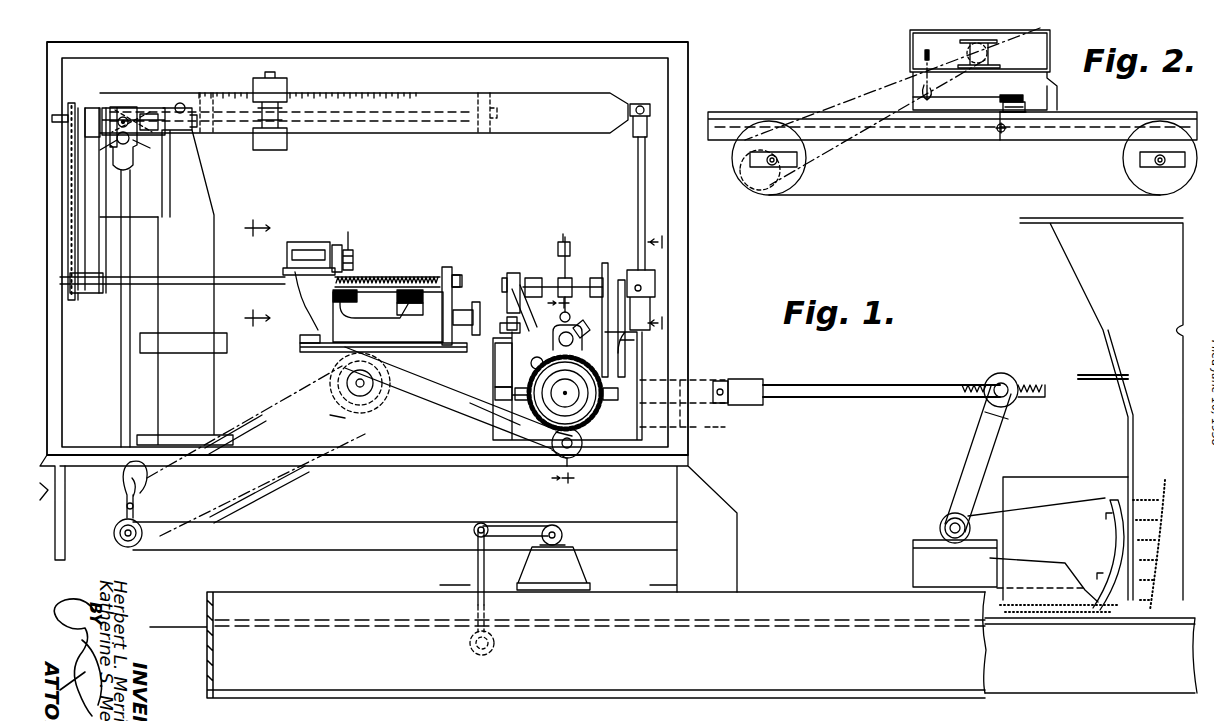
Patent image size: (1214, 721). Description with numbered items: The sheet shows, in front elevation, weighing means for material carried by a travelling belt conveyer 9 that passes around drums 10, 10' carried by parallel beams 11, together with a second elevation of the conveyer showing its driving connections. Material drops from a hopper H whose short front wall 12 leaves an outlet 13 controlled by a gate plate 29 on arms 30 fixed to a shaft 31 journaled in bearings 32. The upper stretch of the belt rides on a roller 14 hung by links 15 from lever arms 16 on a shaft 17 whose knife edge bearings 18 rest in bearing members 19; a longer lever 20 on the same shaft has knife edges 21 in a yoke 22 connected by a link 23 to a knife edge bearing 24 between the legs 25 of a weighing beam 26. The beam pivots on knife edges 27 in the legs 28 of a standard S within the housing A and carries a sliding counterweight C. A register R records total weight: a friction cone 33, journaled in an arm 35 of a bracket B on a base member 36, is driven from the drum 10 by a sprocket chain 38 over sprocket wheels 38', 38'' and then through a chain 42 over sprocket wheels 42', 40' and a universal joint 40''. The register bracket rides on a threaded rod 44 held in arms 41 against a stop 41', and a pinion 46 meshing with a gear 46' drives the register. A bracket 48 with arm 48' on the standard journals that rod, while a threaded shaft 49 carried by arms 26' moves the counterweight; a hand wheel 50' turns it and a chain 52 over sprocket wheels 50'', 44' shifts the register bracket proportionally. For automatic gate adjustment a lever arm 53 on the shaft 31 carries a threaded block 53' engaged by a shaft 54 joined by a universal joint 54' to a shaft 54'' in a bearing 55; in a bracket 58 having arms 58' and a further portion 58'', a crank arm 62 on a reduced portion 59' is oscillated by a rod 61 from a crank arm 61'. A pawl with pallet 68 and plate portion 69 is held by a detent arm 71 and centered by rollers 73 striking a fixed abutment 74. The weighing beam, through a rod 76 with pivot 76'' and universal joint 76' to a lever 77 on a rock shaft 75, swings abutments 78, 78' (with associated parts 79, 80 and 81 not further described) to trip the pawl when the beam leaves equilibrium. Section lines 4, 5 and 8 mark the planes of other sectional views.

In FIG. 1, the section line 4- 4 is at (262, 273).
In FIG. 1, the section line 5- 5 is at (654, 281).
In FIG. 1, the section line 8- 8 is at (556, 391).
In FIG. 1, the travelling belt conveyer 9 is at (1033, 628).
In FIG. 2, the travelling belt conveyer 9 is at (955, 195).
In FIG. 2, the drum 10 is at (805, 158).
In FIG. 2, the drum 10' is at (1139, 158).
In FIG. 1, the beams 11 is at (835, 650).
In FIG. 2, the beams 11 is at (980, 145).
In FIG. 1, the front wall 12 is at (1125, 445).
In FIG. 1, the outlet 13 is at (1160, 528).
In FIG. 1, the roller 14 is at (494, 648).
In FIG. 2, the roller 14 is at (1008, 132).
In FIG. 1, the links 15 is at (478, 572).
In FIG. 2, the links 15 is at (998, 118).
In FIG. 1, the lever arms 16 is at (512, 522).
In FIG. 2, the lever arms 16 is at (1012, 93).
In FIG. 1, the shaft 17 is at (564, 522).
In FIG. 1, the knife edge pivot bearings 18 is at (548, 522).
In FIG. 1, the bearing members 19 is at (570, 556).
In FIG. 2, the bearing members 19 is at (1030, 106).
In FIG. 1, the lever 20 is at (392, 518).
In FIG. 2, the lever 20 is at (978, 90).
In FIG. 1, the knife edge pivot bearings 21 is at (135, 547).
In FIG. 1, the yoke member 22 is at (140, 510).
In FIG. 2, the yoke member 22 is at (922, 92).
In FIG. 1, the link 23 is at (121, 398).
In FIG. 2, the link 23 is at (927, 55).
In FIG. 1, the knife edge pivot bearing 24 is at (126, 107).
In FIG. 1, the legs 25 is at (150, 110).
In FIG. 1, the weighing beam 26 is at (364, 138).
In FIG. 1, the arms 26' is at (372, 137).
In FIG. 1, the knife edge pivot bearings 27 is at (184, 104).
In FIG. 1, the legs 28 is at (170, 130).
In FIG. 1, the plate 29 is at (1112, 508).
In FIG. 1, the arms 30 is at (1033, 530).
In FIG. 1, the shaft 31 is at (940, 526).
In FIG. 1, the bearings 32 is at (915, 544).
In FIG. 1, the friction cone 33 is at (400, 276).
In FIG. 1, the arm 35 is at (446, 268).
In FIG. 1, the base member 36 is at (335, 385).
In FIG. 2, the base member 36 is at (990, 58).
In FIG. 1, the sprocket chain 38 is at (256, 451).
In FIG. 2, the sprocket chain 38 is at (892, 106).
In FIG. 2, the sprocket wheel 38' is at (789, 189).
In FIG. 1, the sprocket wheel 38'' is at (325, 416).
In FIG. 2, the sprocket wheel 38'' is at (961, 47).
In FIG. 1, the sprocket wheel 40' is at (489, 305).
In FIG. 1, the universal joint connection 40'' is at (426, 301).
In FIG. 1, the arms 41 is at (372, 288).
In FIG. 1, the fixed stop 41' is at (314, 307).
In FIG. 1, the sprocket chain 42 is at (450, 381).
In FIG. 1, the sprocket wheel 42' is at (543, 435).
In FIG. 1, the rod 44 is at (172, 263).
In FIG. 1, the sprocket wheel 44' is at (88, 324).
In FIG. 1, the pinion 46 is at (372, 251).
In FIG. 1, the gear 46' is at (367, 245).
In FIG. 1, the bracket 48 is at (91, 303).
In FIG. 1, the arm 48' is at (132, 200).
In FIG. 1, the shaft 49 is at (336, 137).
In FIG. 1, the hand wheel 50' is at (103, 142).
In FIG. 1, the sprocket wheel 50'' is at (81, 176).
In FIG. 1, the sprocket chain 52 is at (75, 190).
In FIG. 1, the lever arm 53 is at (964, 459).
In FIG. 1, the block 53' is at (1001, 372).
In FIG. 1, the shaft 54 is at (904, 373).
In FIG. 1, the universal joint connection 54' is at (744, 368).
In FIG. 1, the shaft 54'' is at (729, 430).
In FIG. 1, the bearing 55 is at (690, 378).
In FIG. 1, the bracket 58 is at (582, 386).
In FIG. 1, the arms 58' is at (514, 272).
In FIG. 1, the housing post 58'' is at (620, 303).
In FIG. 1, the reduced axial projecting portion 59' is at (577, 410).
In FIG. 1, the rod 61 is at (495, 426).
In FIG. 1, the crank arm 61' is at (370, 398).
In FIG. 1, the crank arm 62 is at (605, 487).
In FIG. 1, the pallet 68 is at (549, 345).
In FIG. 1, the plate portion 69 is at (600, 366).
In FIG. 1, the detent arm 71 is at (513, 392).
In FIG. 1, the rollers 73 is at (560, 318).
In FIG. 1, the fixed abutment 74 is at (508, 355).
In FIG. 1, the rock shaft 75 is at (530, 288).
In FIG. 1, the rod 76 is at (625, 203).
In FIG. 1, the universal joint connection 76' is at (641, 300).
In FIG. 1, the pivotal connection 76'' is at (620, 137).
In FIG. 1, the lever 77 is at (610, 280).
In FIG. 1, the abutment 78 is at (501, 315).
In FIG. 1, the abutment 78' is at (588, 316).
In FIG. 1, the stop 79 is at (556, 247).
In FIG. 1, the cross rod 80 is at (567, 285).
In FIG. 1, the pin 81 is at (572, 264).
In FIG. 2, the housing A is at (1050, 40).
In FIG. 1, the bracket B is at (383, 322).
In FIG. 1, the adjustable counterweight C is at (287, 150).
In FIG. 1, the hopper H is at (672, 242).
In FIG. 1, the register R is at (318, 242).
In FIG. 1, the standard S is at (185, 287).